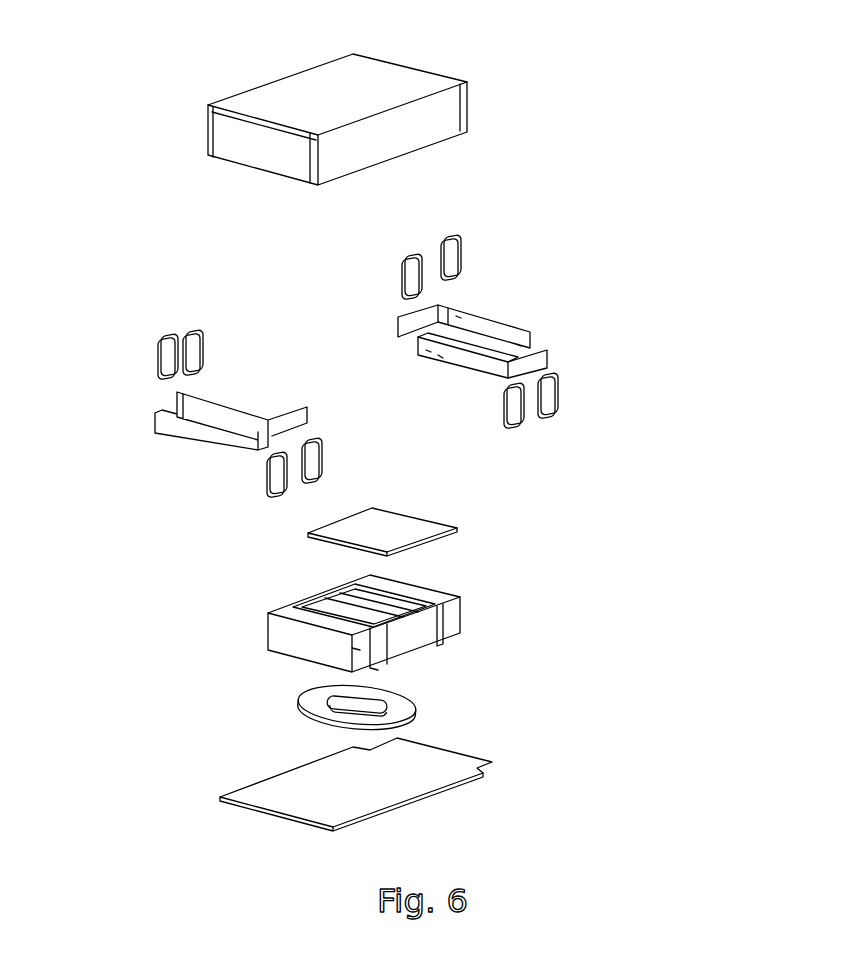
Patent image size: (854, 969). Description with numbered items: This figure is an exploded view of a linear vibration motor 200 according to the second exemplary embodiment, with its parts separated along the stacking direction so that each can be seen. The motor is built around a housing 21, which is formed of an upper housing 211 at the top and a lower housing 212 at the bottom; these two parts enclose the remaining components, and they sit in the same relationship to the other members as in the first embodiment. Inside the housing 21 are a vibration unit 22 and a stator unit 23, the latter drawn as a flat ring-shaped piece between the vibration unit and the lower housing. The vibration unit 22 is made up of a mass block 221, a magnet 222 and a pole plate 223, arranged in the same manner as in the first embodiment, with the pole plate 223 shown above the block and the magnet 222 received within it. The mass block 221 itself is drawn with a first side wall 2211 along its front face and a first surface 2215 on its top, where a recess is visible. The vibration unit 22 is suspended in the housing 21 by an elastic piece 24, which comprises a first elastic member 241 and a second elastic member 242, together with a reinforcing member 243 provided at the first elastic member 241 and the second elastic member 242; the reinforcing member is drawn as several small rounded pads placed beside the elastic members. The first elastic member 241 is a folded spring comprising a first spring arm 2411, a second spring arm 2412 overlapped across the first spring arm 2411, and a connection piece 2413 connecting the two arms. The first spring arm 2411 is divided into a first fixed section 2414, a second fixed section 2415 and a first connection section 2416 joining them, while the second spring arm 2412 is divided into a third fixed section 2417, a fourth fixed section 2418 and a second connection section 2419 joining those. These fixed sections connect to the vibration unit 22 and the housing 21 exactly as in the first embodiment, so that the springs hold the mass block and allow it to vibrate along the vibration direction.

The linear vibration motor 200 is at (345, 33).
The housing 21 is at (77, 704).
The upper housing 211 is at (214, 173).
The lower housing 212 is at (228, 779).
The vibration unit 22 is at (671, 526).
The mass block 221 is at (476, 620).
The first side wall 2211 is at (363, 650).
The first surface 2215 is at (305, 600).
The magnet 222 is at (387, 605).
The pole plate 223 is at (427, 528).
The stator unit 23 is at (403, 705).
The elastic piece 24 is at (734, 226).
The first elastic member 241 is at (671, 272).
The first spring arm 2411 is at (522, 317).
The second spring arm 2412 is at (556, 358).
The connection piece 2413 is at (462, 348).
The first fixed section 2414 is at (487, 345).
The second fixed section 2415 is at (403, 334).
The first connection section 2416 is at (442, 360).
The third fixed section 2417 is at (428, 354).
The fourth fixed section 2418 is at (518, 346).
The second connection section 2419 is at (458, 318).
The second elastic member 242 is at (250, 382).
The reinforcing member 243 is at (555, 403).